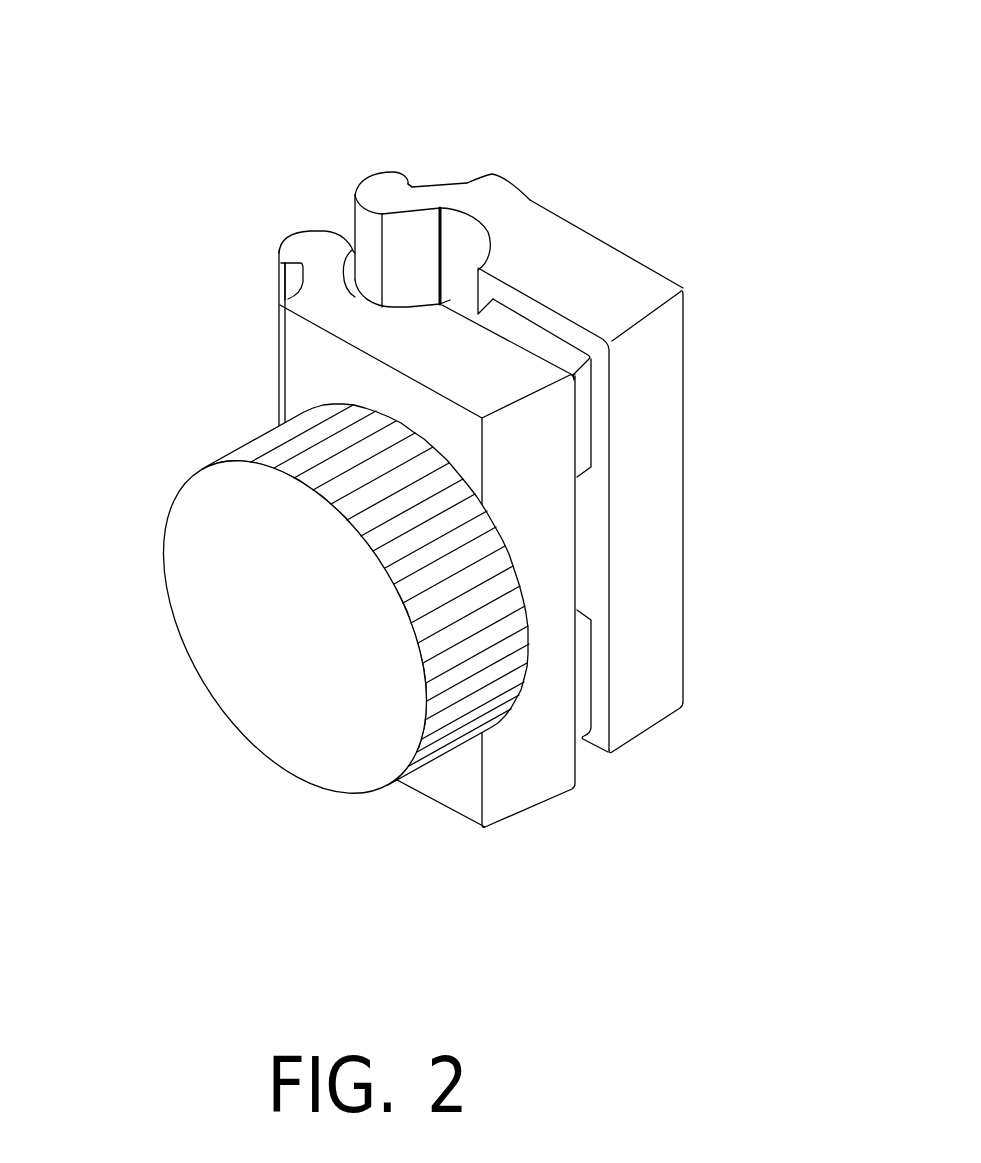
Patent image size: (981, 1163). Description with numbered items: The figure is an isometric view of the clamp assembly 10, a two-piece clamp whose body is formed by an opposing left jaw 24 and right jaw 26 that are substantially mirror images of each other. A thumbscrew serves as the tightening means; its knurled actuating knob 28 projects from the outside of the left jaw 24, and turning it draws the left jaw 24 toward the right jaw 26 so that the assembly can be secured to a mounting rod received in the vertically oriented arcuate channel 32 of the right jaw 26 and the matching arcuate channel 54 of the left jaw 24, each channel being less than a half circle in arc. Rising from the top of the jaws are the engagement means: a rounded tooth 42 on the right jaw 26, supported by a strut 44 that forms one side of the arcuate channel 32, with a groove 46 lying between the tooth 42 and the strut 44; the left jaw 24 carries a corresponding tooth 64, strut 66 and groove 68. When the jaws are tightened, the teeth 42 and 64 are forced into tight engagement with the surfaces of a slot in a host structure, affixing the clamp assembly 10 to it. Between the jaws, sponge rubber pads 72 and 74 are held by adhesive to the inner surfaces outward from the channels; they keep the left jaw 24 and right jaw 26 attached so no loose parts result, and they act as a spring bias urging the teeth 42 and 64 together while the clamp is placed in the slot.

The clamp assembly 10 is at (703, 175).
The left jaw 24 is at (445, 808).
The right jaw 26 is at (686, 650).
The knurled actuating knob 28 is at (230, 555).
The arcuate channel 32 is at (488, 238).
The tooth 42 is at (376, 178).
The strut 44 is at (475, 198).
The groove 46 is at (410, 185).
The arcuate channel 54 is at (393, 308).
The tooth 64 is at (313, 238).
The strut 66 is at (323, 292).
The groove 68 is at (281, 266).
The sponge rubber pad 72 is at (541, 341).
The sponge rubber pad 74 is at (584, 695).